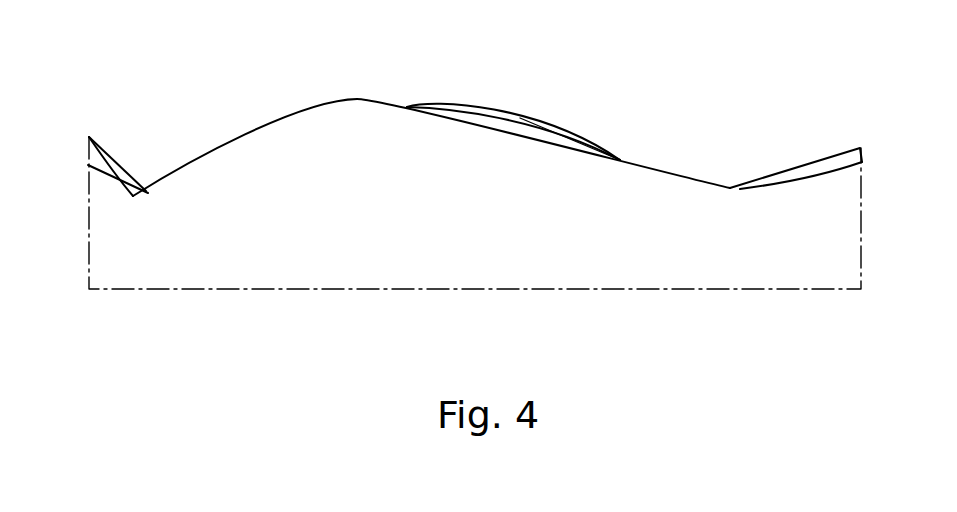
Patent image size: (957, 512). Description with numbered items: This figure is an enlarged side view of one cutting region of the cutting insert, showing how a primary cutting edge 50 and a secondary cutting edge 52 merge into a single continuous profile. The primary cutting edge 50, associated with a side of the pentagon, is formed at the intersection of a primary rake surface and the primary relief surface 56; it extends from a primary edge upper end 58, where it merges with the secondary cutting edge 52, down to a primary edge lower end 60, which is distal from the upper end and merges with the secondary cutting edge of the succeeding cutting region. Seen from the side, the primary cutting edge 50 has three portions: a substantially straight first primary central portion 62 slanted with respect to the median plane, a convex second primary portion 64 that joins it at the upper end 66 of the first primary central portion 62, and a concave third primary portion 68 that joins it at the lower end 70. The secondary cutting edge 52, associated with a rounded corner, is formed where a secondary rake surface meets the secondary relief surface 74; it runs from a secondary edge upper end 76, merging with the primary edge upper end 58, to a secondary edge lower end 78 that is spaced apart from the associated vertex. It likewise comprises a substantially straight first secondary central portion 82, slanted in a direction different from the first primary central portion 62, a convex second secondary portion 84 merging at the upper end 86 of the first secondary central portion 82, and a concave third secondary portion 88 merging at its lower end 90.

The primary cutting edge 50 is at (632, 148).
The secondary cutting edge 52 is at (248, 118).
The primary relief surface 56 is at (491, 172).
The primary edge upper end 58 is at (385, 103).
The primary edge lower end 60 is at (770, 189).
The first primary central portion 62 is at (549, 140).
The second primary portion 64 is at (407, 107).
The upper end of the first primary central portion 66 is at (411, 106).
The third primary portion 68 is at (729, 187).
The lower end of the first primary central portion 70 is at (703, 180).
The secondary relief surface 74 is at (299, 160).
The secondary edge upper end 76 is at (357, 100).
The secondary edge lower end 78 is at (133, 198).
The first secondary central portion 82 is at (213, 148).
The second secondary portion 84 is at (320, 103).
The upper end of the first secondary central portion 86 is at (293, 110).
The third secondary portion 88 is at (147, 190).
The lower end of the first secondary central portion 90 is at (162, 180).